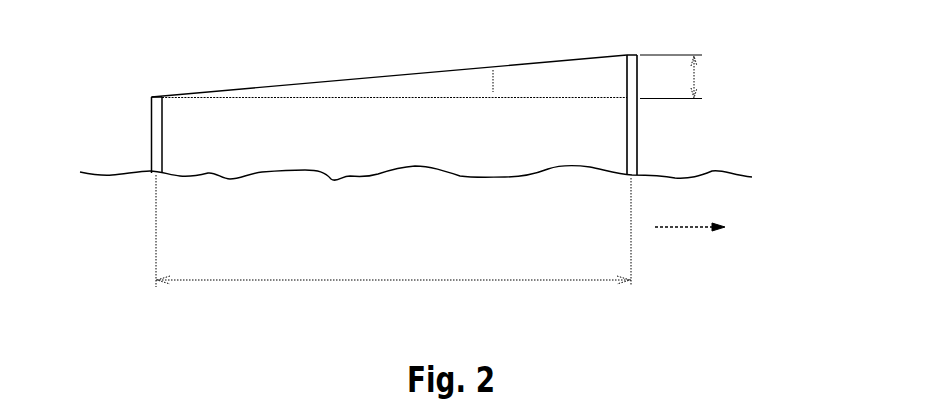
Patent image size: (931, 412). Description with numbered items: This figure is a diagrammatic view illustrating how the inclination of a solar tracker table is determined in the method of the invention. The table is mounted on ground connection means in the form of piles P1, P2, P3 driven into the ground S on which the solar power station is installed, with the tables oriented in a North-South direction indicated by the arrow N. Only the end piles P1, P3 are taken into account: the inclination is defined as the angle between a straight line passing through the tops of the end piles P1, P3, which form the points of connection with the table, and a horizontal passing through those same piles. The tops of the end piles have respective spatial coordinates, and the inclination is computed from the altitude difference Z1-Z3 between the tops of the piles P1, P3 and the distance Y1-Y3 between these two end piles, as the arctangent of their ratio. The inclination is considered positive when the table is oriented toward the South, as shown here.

The end pile P1 is at (631, 135).
The pile P2 is at (410, 145).
The end pile P3 is at (151, 133).
The ground S is at (724, 186).
The North direction N is at (700, 228).
The altitude difference Z1-Z3 is at (699, 77).
The distance between end piles Y1-Y3 is at (393, 247).